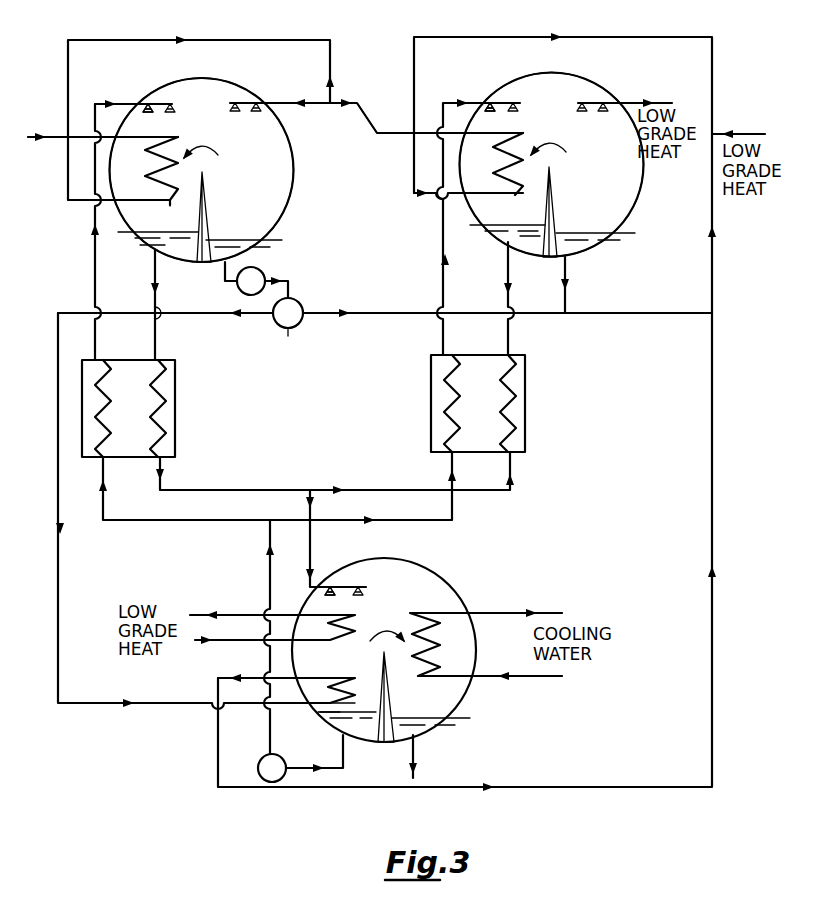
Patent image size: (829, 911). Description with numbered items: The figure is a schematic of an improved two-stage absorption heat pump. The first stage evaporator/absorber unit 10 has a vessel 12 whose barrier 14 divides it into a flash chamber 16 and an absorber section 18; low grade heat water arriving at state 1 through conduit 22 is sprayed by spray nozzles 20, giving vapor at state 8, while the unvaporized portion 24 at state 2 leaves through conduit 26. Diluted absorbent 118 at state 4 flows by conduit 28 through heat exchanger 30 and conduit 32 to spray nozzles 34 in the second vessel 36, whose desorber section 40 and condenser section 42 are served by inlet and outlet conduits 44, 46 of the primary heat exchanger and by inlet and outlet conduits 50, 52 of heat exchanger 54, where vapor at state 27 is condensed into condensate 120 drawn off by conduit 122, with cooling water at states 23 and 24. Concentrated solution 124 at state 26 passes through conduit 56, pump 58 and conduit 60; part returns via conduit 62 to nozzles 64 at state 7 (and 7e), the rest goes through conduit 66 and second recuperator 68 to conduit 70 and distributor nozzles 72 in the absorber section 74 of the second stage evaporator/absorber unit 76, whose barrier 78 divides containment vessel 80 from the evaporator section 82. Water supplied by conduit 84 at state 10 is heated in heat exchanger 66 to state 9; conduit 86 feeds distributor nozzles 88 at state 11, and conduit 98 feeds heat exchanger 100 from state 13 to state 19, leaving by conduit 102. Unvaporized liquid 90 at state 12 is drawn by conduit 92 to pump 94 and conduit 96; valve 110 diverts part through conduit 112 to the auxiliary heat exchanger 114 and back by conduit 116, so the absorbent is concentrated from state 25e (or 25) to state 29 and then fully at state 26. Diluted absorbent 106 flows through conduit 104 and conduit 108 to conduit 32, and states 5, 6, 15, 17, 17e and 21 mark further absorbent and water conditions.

The state point 1 is at (655, 87).
The state point 2 is at (575, 285).
The state point 4 is at (502, 300).
The state point 5 is at (519, 471).
The state point 6 is at (437, 472).
The state point 7 is at (463, 215).
The spray state point 7e is at (501, 118).
The state point 8 is at (545, 133).
The state point 9 is at (394, 147).
The first stage evaporator/absorber unit 10 is at (629, 226).
The state point 11 is at (380, 103).
The vessel 12 is at (643, 196).
The state point 13 is at (73, 211).
The barrier 14 is at (553, 196).
The state point 15 is at (173, 473).
The flash chamber 16 is at (591, 183).
The state point 17 is at (119, 217).
The spray state point 17e is at (158, 120).
The absorber section 18 is at (458, 166).
The state point 19 is at (44, 121).
The spray nozzles 20 is at (438, 383).
The state point 21 is at (205, 602).
The conduit 22 is at (624, 103).
The state point 23 is at (513, 690).
The unvaporized liquid portion 24 is at (500, 604).
The state point 25 is at (325, 539).
The state point 25e is at (343, 601).
The conduit 26 is at (565, 276).
The state point 27 is at (377, 614).
The conduit 28 is at (515, 332).
The state point 29 is at (336, 676).
The heat exchanger 30 is at (525, 396).
The conduit 32 is at (486, 492).
The spray nozzles 34 is at (338, 592).
The second vessel 36 is at (457, 590).
The desorber section 40 is at (348, 671).
The condenser section 42 is at (443, 656).
The inlet conduit 44 is at (250, 641).
The outlet conduit 46 is at (233, 616).
The inlet conduit 50 is at (505, 676).
The outlet conduit 52 is at (506, 613).
The heat exchanger 54 is at (437, 626).
The conduit 56 is at (312, 768).
The pump 58 is at (260, 774).
The conduit 60 is at (422, 522).
The conduit 62 is at (440, 332).
The nozzles 64 is at (498, 107).
The heat exchanger 66 is at (172, 545).
The second recuperator 68 is at (176, 407).
The conduit 70 is at (100, 335).
The distributor nozzles 72 is at (160, 107).
The absorber section 74 is at (117, 173).
The second stage evaporator/absorber unit 76 is at (299, 207).
The barrier 78 is at (208, 212).
The containment vessel 80 is at (295, 162).
The evaporator section 82 is at (238, 196).
The conduit 84 is at (570, 37).
The conduit 86 is at (385, 108).
The distributor nozzles 88 is at (246, 127).
The unvaporized liquid 90 is at (257, 246).
The conduit 92 is at (228, 278).
The pump 94 is at (266, 278).
The conduit 96 is at (378, 313).
The conduit 98 is at (262, 40).
The heat exchanger 100 is at (164, 215).
The conduit 102 is at (53, 140).
The conduit 104 is at (161, 335).
The diluted absorbent liquid 106 is at (170, 243).
The conduit 108 is at (233, 490).
The valve 110 is at (293, 329).
The conduit 112 is at (63, 577).
The auxiliary heat exchanger 114 is at (318, 710).
The conduit 116 is at (218, 736).
The diluted absorbent liquid 118 is at (515, 239).
The condensate 120 is at (450, 722).
The conduit 122 is at (434, 756).
The lithium bromide/water solution 124 is at (380, 722).